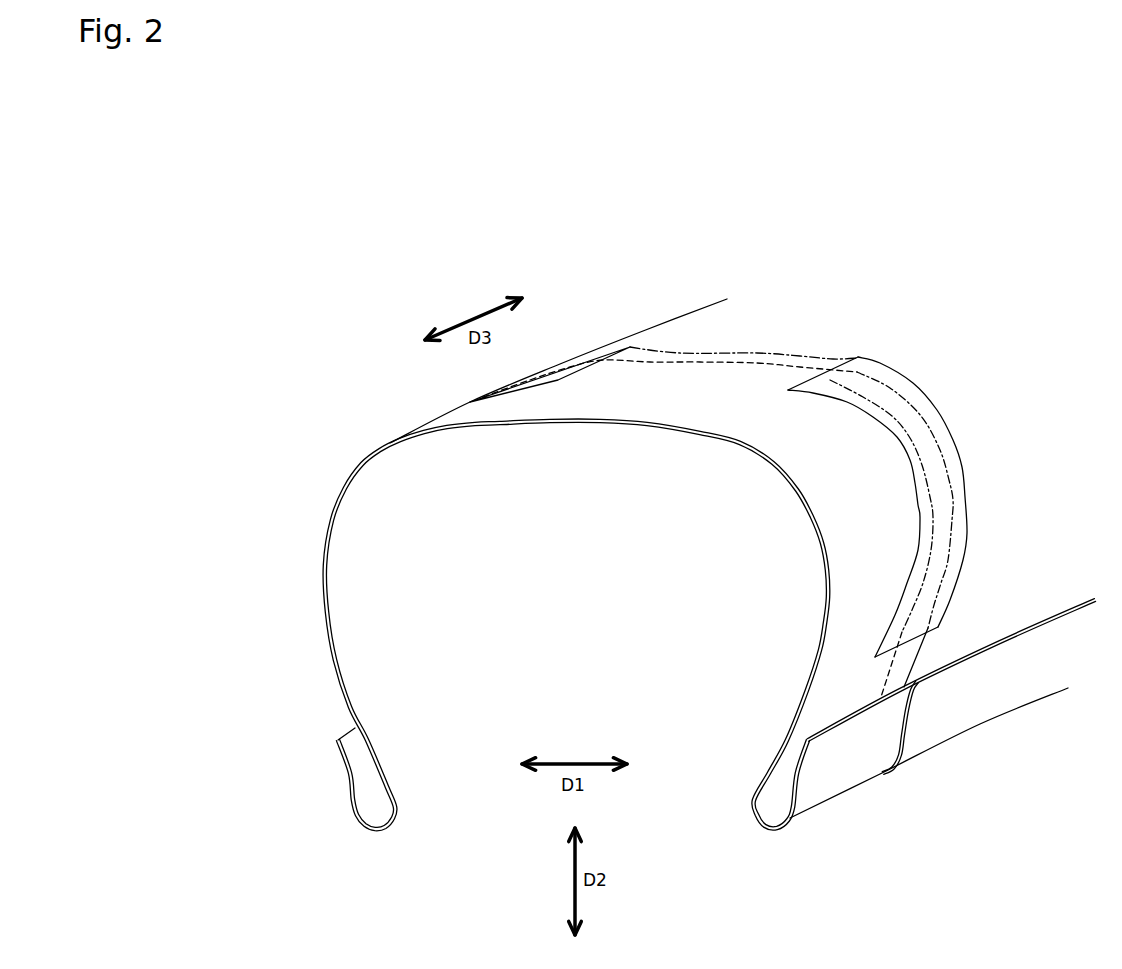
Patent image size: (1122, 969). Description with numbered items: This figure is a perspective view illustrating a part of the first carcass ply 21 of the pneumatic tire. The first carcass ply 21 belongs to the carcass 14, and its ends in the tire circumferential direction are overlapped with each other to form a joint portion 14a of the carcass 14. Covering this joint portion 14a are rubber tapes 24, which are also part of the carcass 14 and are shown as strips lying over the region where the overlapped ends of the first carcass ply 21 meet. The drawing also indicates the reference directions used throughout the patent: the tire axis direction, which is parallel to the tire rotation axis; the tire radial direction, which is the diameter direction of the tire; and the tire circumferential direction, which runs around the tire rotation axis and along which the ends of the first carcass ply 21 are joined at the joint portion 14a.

The carcass 14 is at (412, 404).
The joint portion 14a is at (758, 360).
The first carcass ply 21 is at (648, 426).
The rubber tapes 24 is at (603, 351).